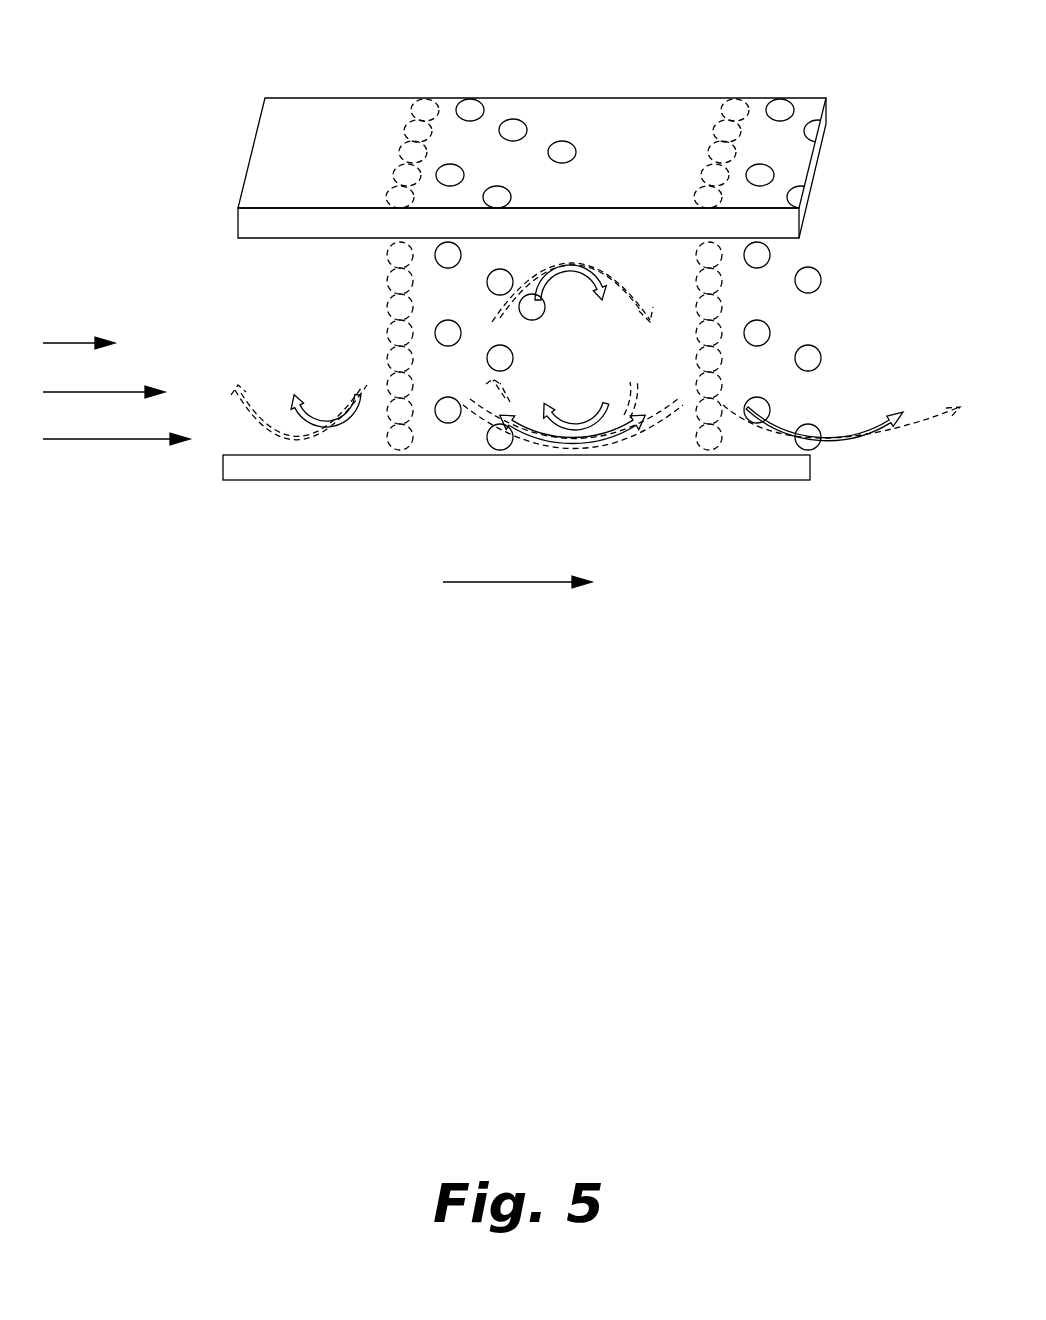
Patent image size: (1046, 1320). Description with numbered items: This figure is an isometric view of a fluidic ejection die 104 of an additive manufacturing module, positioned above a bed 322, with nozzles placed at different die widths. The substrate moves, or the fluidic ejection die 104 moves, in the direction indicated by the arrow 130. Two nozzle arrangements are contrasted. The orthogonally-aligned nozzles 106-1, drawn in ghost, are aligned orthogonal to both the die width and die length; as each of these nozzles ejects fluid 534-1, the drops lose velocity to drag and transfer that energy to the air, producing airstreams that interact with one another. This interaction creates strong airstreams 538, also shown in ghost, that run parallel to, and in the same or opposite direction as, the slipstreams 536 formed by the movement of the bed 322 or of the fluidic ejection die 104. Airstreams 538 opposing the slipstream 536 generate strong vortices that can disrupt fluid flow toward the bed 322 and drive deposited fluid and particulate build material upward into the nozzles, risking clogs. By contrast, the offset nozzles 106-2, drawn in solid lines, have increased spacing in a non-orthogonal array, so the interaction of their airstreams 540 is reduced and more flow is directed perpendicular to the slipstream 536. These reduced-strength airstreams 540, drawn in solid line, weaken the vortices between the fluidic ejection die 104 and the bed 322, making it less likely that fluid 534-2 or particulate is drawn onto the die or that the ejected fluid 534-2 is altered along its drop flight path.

The fluidic ejection die 104 is at (275, 142).
The orthogonally-aligned nozzles 106-1 is at (420, 99).
The offset nozzles 106-2 is at (471, 98).
The fluid ejected from orthogonal nozzles 534-1 is at (392, 253).
The fluid ejected from offset nozzles 534-2 is at (808, 280).
The slipstreams 536 is at (132, 440).
The airstreams 538 is at (248, 390).
The reduced-strength airstreams 540 is at (332, 423).
The bed 322 is at (330, 465).
The arrow indicating direction of movement 130 is at (532, 585).